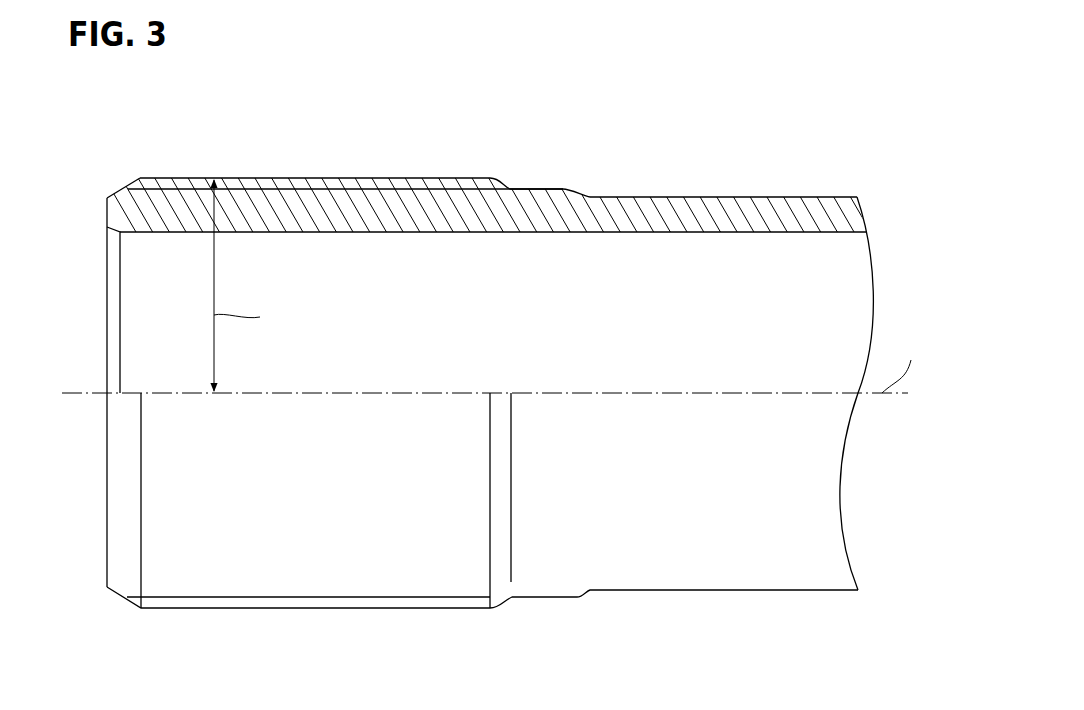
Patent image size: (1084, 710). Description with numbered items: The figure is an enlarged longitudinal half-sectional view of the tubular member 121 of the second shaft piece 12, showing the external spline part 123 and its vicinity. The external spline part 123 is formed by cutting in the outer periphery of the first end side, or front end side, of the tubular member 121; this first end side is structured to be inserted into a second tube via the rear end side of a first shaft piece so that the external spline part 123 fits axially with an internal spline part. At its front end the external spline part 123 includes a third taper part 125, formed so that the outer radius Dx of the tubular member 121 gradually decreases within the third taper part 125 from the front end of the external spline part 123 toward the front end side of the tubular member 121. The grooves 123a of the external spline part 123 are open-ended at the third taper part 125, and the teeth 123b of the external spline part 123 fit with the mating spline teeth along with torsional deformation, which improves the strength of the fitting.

The second shaft piece 12 is at (490, 311).
The tubular member 121 is at (694, 184).
The external spline part 123 is at (433, 68).
The grooves 123a is at (332, 178).
The teeth 123b is at (388, 178).
The third taper part 125 is at (122, 189).